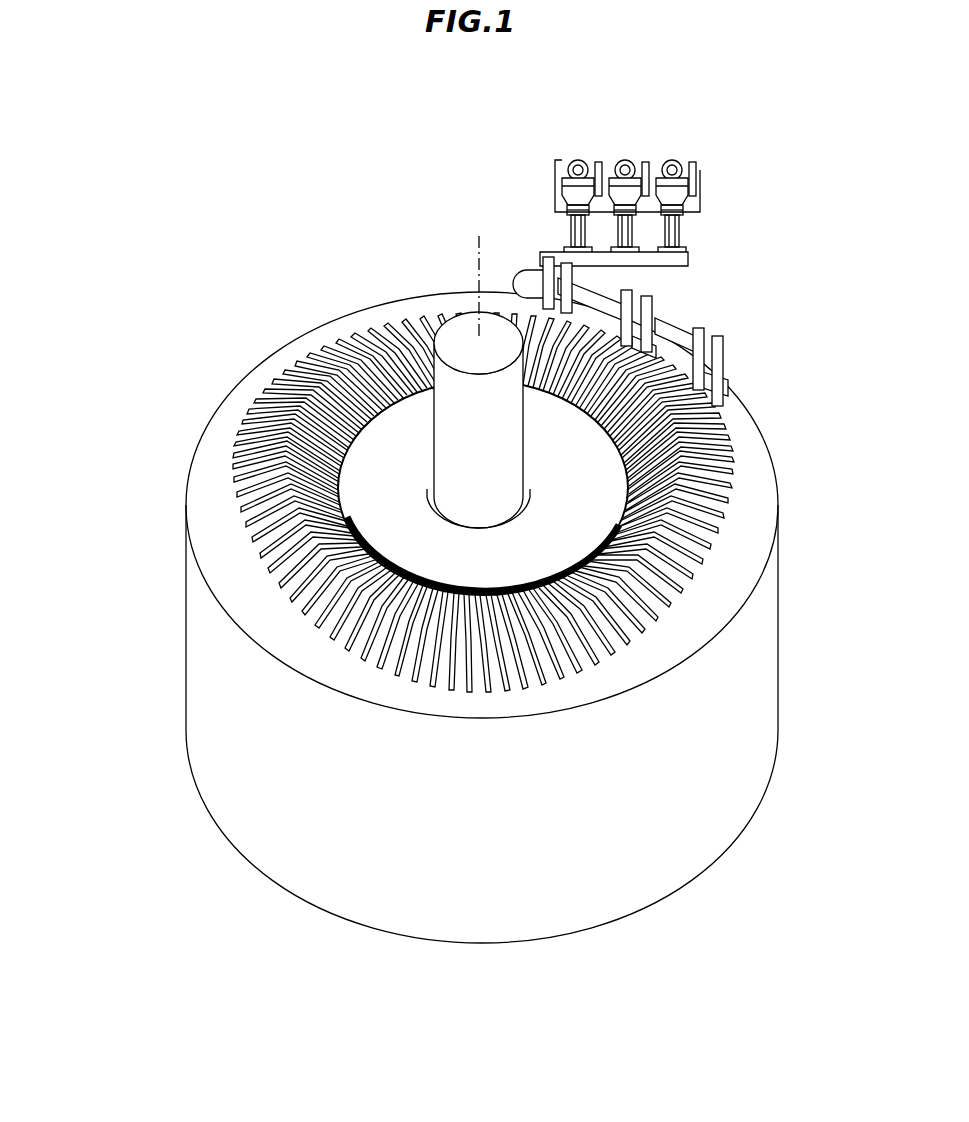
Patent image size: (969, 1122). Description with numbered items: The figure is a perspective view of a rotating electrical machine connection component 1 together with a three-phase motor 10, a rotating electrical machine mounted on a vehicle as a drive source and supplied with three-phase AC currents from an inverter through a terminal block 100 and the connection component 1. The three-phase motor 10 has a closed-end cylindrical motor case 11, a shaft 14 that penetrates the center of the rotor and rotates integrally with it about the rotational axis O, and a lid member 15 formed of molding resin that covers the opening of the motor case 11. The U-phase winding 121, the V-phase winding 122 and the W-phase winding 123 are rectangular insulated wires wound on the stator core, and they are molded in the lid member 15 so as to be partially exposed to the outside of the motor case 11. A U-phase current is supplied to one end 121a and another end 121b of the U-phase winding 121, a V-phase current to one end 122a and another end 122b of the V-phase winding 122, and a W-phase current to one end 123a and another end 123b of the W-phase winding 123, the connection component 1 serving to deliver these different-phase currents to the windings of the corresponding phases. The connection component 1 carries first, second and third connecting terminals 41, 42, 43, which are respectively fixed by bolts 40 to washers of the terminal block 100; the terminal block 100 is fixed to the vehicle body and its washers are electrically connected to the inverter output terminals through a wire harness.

The rotating electrical machine connection component 1 is at (690, 243).
The three-phase motor 10 is at (252, 250).
The motor case 11 is at (186, 625).
The shaft 14 is at (460, 327).
The lid member 15 is at (753, 472).
The bolt 40 is at (580, 159).
The first connecting terminal 41 is at (686, 163).
The second connecting terminal 42 is at (639, 163).
The third connecting terminal 43 is at (592, 163).
The terminal block 100 is at (540, 176).
The U-phase winding 121 is at (352, 335).
The one end of the U-phase winding 121a is at (720, 360).
The another end of the U-phase winding 121b is at (702, 340).
The V-phase winding 122 is at (287, 378).
The one end of the V-phase winding 122a is at (648, 318).
The another end of the V-phase winding 122b is at (630, 300).
The W-phase winding 123 is at (242, 434).
The one end of the W-phase winding 123a is at (565, 303).
The another end of the W-phase winding 123b is at (546, 257).
The rotational axis O is at (470, 250).